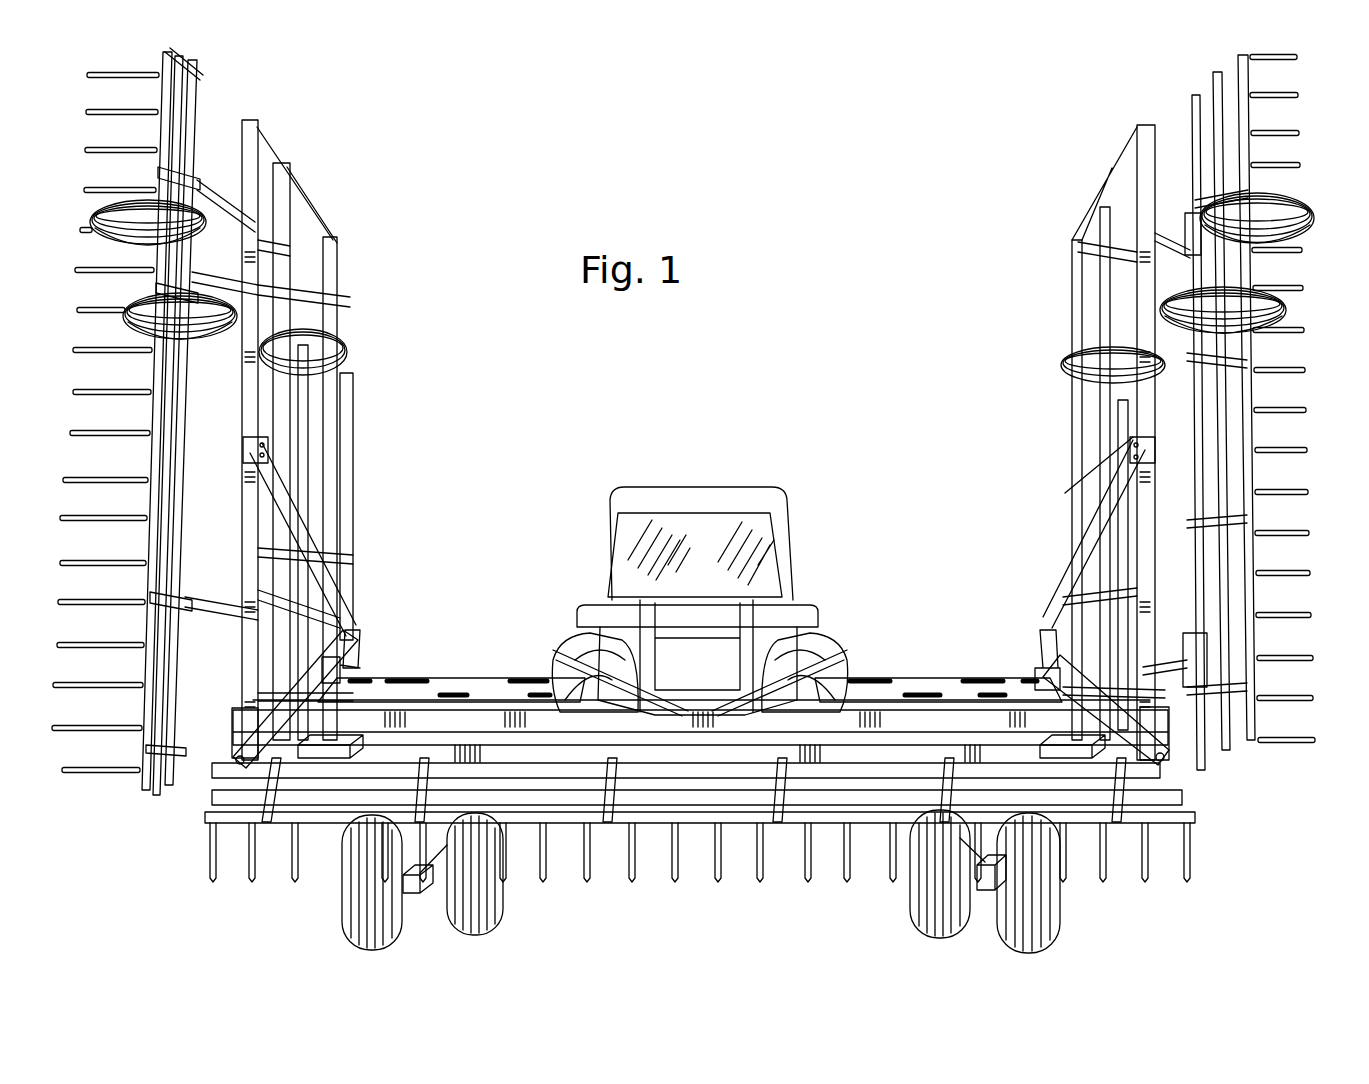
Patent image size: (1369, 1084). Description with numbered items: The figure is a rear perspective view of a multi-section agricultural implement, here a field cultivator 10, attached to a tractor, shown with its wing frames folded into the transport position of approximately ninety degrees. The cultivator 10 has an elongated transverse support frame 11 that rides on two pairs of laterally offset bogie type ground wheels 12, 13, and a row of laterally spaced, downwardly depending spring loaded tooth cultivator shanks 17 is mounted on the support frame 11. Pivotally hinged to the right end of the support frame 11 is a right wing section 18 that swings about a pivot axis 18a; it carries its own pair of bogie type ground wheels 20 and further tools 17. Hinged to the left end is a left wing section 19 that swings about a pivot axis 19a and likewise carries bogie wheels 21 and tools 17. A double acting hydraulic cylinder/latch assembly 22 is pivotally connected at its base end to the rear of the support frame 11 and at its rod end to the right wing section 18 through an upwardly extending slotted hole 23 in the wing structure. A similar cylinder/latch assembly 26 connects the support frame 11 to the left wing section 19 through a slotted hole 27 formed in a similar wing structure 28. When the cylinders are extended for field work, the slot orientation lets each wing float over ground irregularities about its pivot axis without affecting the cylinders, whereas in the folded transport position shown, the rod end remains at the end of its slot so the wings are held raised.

The cultivator 10 is at (372, 752).
The support frame 11 is at (742, 748).
The ground wheels 12 is at (1036, 905).
The ground wheels 13 is at (465, 938).
The tooth cultivator shanks 17 is at (196, 402).
The right wing section 18 is at (1147, 133).
The pivot axis 18a is at (1163, 761).
The left wing section 19 is at (243, 431).
The pivot axis 19a is at (237, 764).
The bogie type ground wheels 20 is at (1320, 222).
The bogie wheels 21 is at (88, 222).
The hydraulic cylinder/latch assembly 22 is at (927, 676).
The slotted hole 23 is at (1053, 650).
The cylinder/latch assembly 26 is at (478, 677).
The slotted hole 27 is at (350, 658).
The wing structure 28 is at (350, 614).